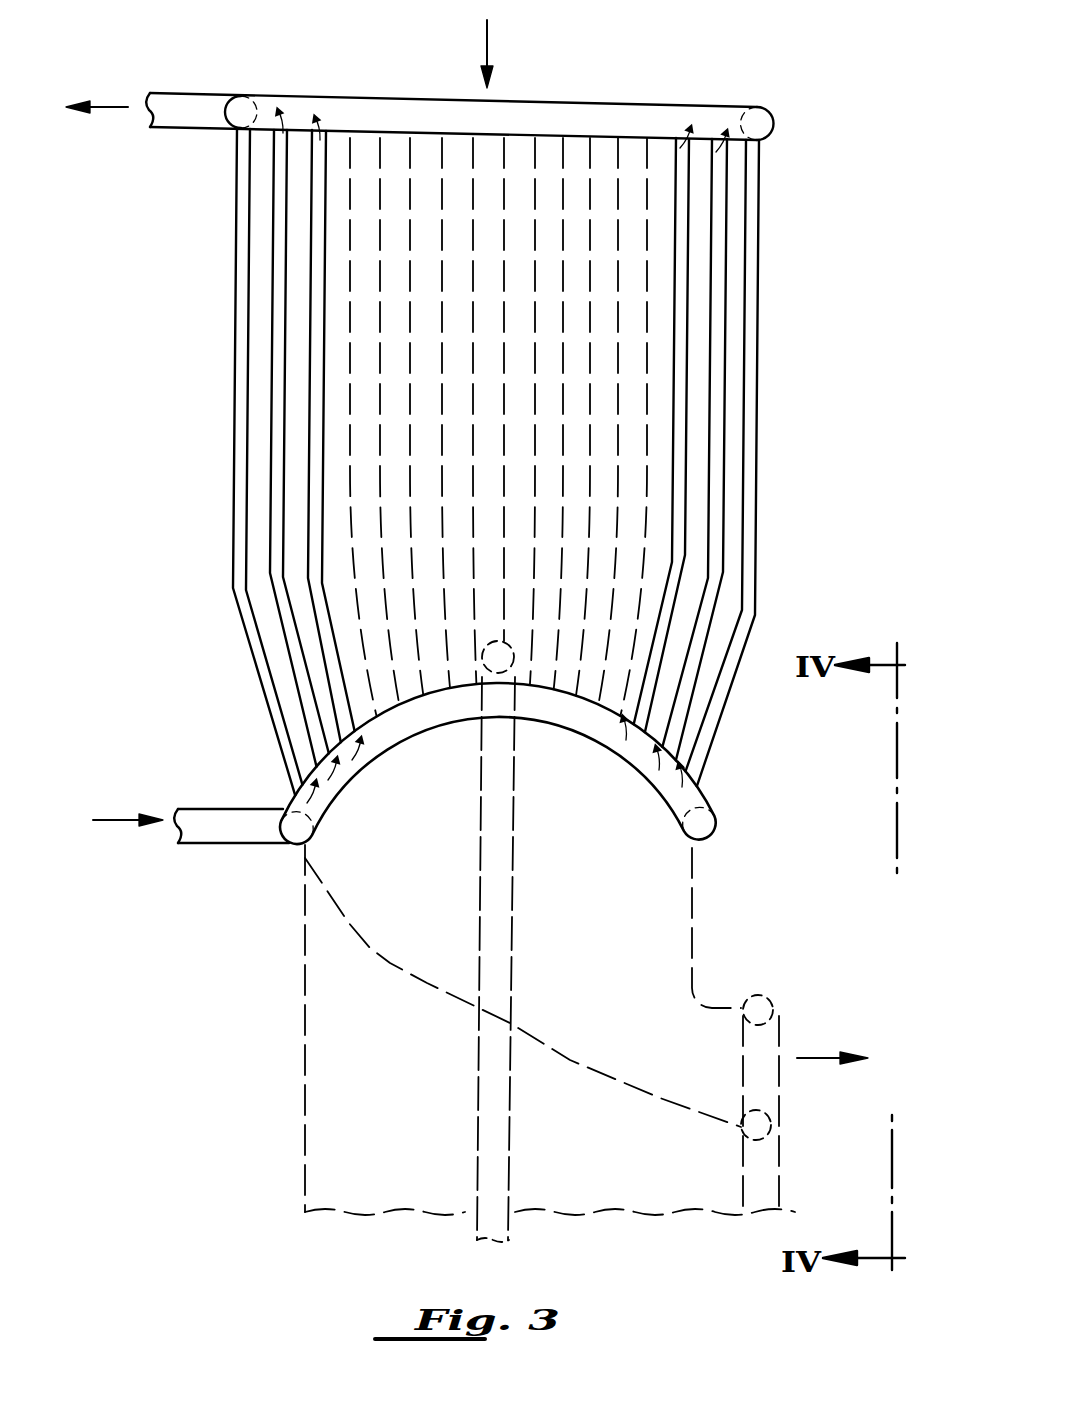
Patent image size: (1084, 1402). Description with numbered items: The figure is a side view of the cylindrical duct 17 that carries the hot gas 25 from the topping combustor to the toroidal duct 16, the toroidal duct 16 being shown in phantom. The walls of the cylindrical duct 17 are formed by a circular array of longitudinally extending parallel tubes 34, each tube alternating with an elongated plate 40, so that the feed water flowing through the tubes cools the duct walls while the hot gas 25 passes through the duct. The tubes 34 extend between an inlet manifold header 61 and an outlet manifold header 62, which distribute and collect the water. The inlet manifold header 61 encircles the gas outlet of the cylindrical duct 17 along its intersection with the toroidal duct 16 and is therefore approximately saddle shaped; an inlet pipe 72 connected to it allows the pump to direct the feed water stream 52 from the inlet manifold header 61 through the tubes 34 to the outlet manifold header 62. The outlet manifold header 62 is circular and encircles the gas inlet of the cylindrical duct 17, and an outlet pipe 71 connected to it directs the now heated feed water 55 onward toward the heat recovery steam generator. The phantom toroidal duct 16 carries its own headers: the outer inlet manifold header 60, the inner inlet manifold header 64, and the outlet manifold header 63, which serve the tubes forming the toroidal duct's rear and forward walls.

The toroidal duct 16 is at (693, 918).
The cylindrical duct 17 is at (544, 455).
The hot gas 25 is at (488, 43).
The tubes 34 is at (720, 340).
The elongated plate 40 is at (700, 250).
The feed water stream 52 is at (118, 818).
The heated feed water 55 is at (110, 106).
The outer inlet manifold header 60 is at (768, 997).
The inlet manifold header 61 is at (712, 798).
The outlet manifold header 62 is at (685, 108).
The outlet manifold header 63 is at (510, 915).
The inner inlet manifold header 64 is at (760, 1112).
The outlet pipe 71 is at (192, 98).
The inlet pipe 72 is at (226, 838).